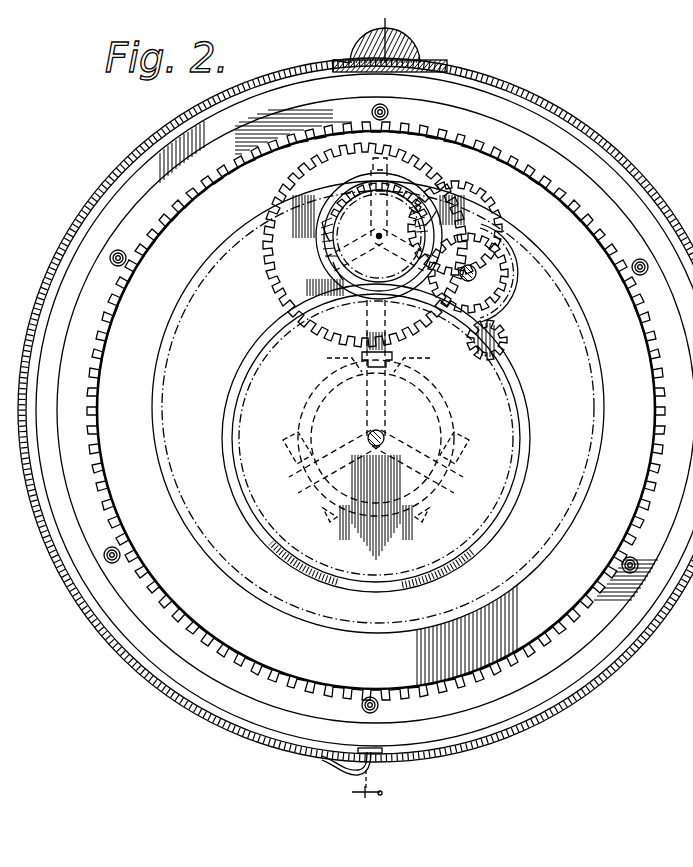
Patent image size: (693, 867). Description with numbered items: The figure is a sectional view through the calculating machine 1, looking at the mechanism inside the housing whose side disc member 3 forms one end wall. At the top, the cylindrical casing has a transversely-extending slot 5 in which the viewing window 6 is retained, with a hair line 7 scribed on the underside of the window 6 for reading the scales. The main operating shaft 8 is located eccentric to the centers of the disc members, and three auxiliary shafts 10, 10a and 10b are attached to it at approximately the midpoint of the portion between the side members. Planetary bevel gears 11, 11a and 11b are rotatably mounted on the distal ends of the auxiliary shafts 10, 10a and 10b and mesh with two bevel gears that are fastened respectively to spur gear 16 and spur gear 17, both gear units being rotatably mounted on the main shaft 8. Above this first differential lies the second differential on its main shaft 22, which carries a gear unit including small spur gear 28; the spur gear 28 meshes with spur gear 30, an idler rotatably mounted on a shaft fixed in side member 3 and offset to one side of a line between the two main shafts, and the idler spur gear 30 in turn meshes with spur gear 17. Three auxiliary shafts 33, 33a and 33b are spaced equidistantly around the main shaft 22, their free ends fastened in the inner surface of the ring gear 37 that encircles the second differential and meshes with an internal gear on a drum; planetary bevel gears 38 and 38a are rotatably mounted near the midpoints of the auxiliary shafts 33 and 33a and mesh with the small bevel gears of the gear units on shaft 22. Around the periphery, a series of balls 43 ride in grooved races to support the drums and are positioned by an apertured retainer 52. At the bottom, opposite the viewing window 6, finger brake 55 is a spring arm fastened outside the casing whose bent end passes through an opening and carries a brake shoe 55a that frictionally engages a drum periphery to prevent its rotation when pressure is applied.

The case bezel 1 is at (672, 243).
The side disc member 3 is at (387, 21).
The transversely-extending slot 5 is at (425, 62).
The viewing window 6 is at (352, 56).
The hair line 7 is at (398, 45).
The main operating shaft 8 is at (384, 437).
The auxiliary shaft 10 is at (387, 383).
The auxiliary shaft 10a is at (365, 441).
The auxiliary shaft 10b is at (420, 456).
The planetary bevel gear 11 is at (423, 363).
The planetary bevel gear 11a is at (287, 446).
The planetary bevel gear 11b is at (468, 446).
The spur gear 16 is at (530, 405).
The spur gear 17 is at (498, 333).
The main shaft of the second differential 22 is at (371, 224).
The small spur gear 28 is at (447, 190).
The spur gear 30 is at (507, 287).
The auxiliary shaft 33 is at (387, 188).
The auxiliary shaft 33a is at (333, 258).
The auxiliary shaft 33b is at (460, 192).
The ring gear 37 is at (297, 297).
The planetary bevel gear 38 is at (411, 214).
The planetary bevel gear 38a is at (314, 232).
The series of balls 43 is at (388, 112).
The retainer 52 is at (540, 678).
The finger brake 55 is at (372, 768).
The brake shoe 55a is at (375, 742).